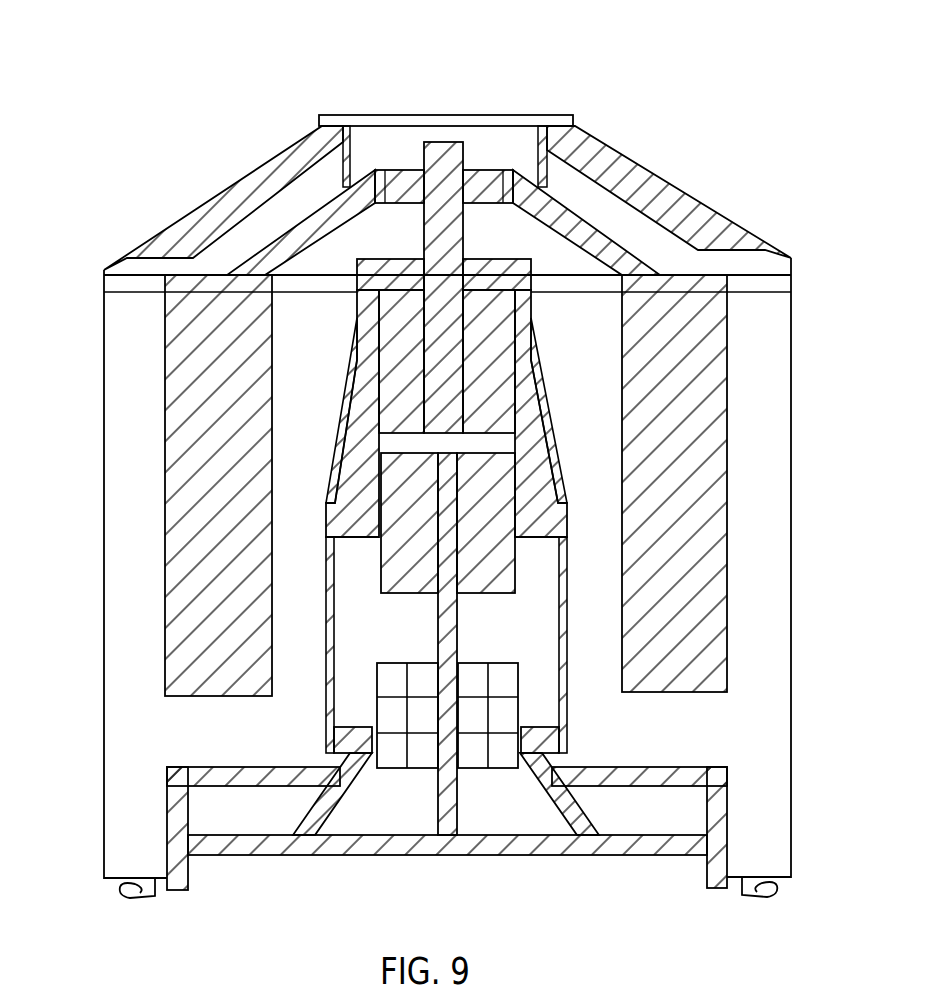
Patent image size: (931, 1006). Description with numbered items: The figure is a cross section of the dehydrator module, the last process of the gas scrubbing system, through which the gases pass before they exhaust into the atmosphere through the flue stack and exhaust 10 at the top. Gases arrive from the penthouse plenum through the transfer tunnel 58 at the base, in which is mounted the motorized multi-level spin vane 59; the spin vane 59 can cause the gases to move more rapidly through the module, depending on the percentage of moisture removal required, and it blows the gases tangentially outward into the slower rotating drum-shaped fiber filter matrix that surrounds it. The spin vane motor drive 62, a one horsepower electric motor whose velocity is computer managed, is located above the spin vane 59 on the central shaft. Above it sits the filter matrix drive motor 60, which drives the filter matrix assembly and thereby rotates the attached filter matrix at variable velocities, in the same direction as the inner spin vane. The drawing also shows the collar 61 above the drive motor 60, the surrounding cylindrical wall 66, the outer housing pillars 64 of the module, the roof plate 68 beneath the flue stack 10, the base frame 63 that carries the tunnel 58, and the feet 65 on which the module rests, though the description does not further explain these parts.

The flue stack and exhaust 10 is at (487, 138).
The transfer tunnel 58 is at (395, 810).
The motorized multi-level spin vane 59 is at (393, 684).
The filter matrix drive motor 60 is at (494, 334).
The bearing collar 61 is at (428, 194).
The spin vane motor drive 62 is at (417, 553).
The base frame 63 is at (640, 817).
The outer pillar 64 is at (193, 593).
The foot 65 is at (120, 885).
The cylindrical wall 66 is at (565, 607).
The roof plate 68 is at (607, 188).